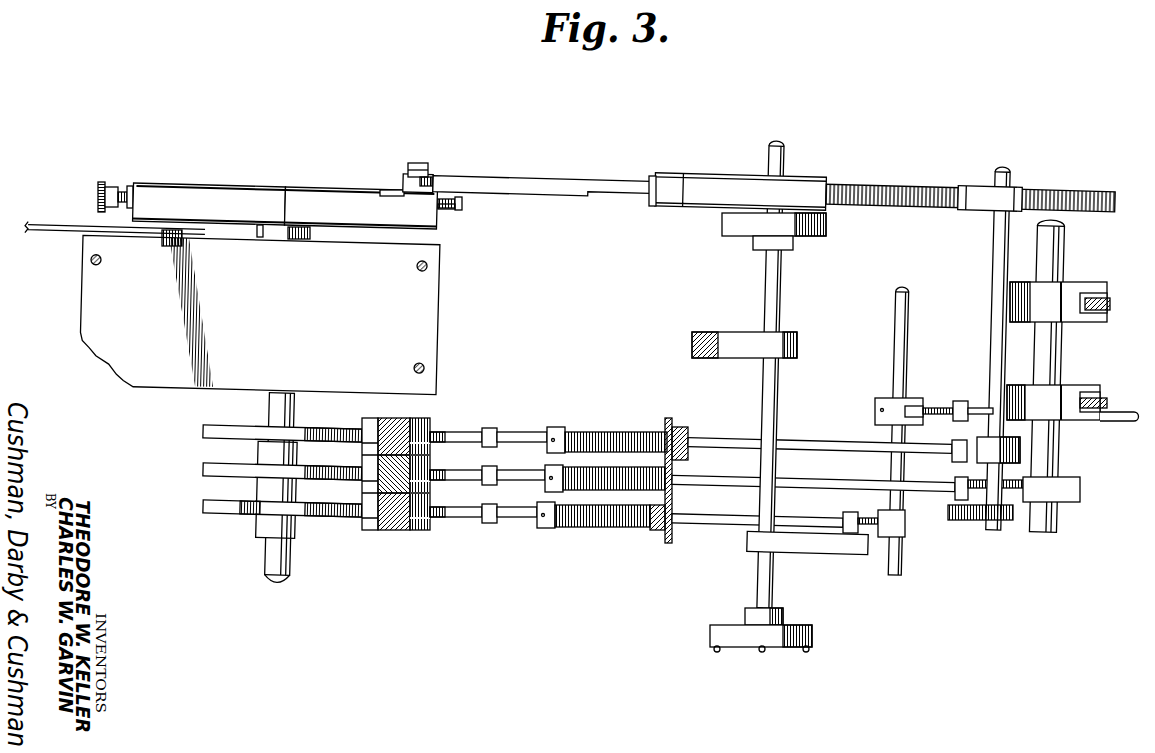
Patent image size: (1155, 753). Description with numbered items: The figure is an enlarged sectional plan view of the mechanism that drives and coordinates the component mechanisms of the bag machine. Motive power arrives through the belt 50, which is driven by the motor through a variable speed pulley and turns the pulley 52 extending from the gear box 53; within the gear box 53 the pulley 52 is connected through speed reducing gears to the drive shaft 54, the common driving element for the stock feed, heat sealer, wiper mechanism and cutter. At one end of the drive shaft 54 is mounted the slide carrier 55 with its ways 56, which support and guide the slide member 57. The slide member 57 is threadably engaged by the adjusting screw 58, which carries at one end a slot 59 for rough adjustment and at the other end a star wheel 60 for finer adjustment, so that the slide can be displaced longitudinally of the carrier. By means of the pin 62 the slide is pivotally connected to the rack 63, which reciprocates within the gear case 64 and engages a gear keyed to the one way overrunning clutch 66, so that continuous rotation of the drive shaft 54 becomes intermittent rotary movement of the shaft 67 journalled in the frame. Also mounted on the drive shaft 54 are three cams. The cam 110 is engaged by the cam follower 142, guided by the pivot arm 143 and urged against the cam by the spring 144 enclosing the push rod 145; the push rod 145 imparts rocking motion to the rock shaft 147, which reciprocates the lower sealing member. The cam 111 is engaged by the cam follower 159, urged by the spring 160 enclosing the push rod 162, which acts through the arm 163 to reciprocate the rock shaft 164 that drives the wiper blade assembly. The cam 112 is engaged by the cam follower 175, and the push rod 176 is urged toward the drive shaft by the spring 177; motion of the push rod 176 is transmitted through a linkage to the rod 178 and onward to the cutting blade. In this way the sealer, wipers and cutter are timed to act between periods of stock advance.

The belt 50 is at (51, 236).
The pulley 52 is at (177, 230).
The gear box 53 is at (90, 312).
The drive shaft 54 is at (263, 562).
The slide carrier 55 is at (330, 202).
The ways 56 is at (295, 189).
The slide member 57 is at (376, 187).
The adjusting screw 58 is at (450, 209).
The slot 59 is at (462, 205).
The star wheel 60 is at (105, 180).
The pin 62 is at (418, 164).
The rack 63 is at (942, 187).
The gear case 64 is at (797, 177).
The one way overrunning clutch 66 is at (722, 226).
The shaft 67 is at (766, 156).
The cam 110 is at (203, 472).
The cam 111 is at (203, 433).
The cam 112 is at (203, 508).
The cam follower 142 is at (360, 473).
The pivot arm 143 is at (428, 426).
The spring 144 is at (575, 474).
The push rod 145 is at (687, 482).
The rock shaft 147 is at (1038, 533).
The cam follower 159 is at (360, 434).
The spring 160 is at (605, 432).
The push rod 162 is at (700, 442).
The arm 163 is at (1022, 459).
The rock shaft 164 is at (988, 527).
The cam follower 175 is at (363, 512).
The push rod 176 is at (688, 522).
The spring 177 is at (585, 523).
The rod 178 is at (1120, 414).